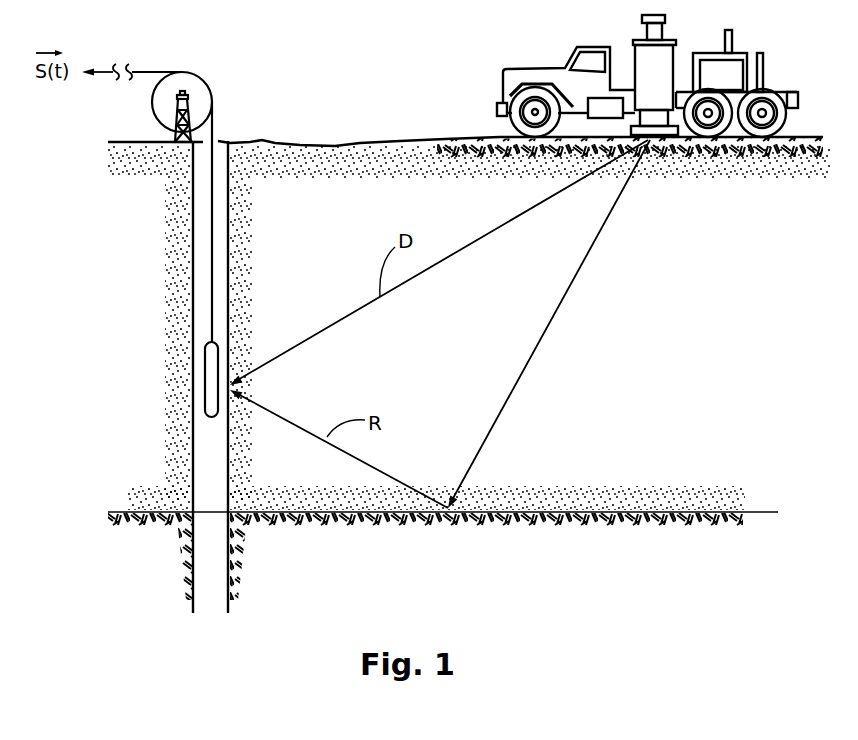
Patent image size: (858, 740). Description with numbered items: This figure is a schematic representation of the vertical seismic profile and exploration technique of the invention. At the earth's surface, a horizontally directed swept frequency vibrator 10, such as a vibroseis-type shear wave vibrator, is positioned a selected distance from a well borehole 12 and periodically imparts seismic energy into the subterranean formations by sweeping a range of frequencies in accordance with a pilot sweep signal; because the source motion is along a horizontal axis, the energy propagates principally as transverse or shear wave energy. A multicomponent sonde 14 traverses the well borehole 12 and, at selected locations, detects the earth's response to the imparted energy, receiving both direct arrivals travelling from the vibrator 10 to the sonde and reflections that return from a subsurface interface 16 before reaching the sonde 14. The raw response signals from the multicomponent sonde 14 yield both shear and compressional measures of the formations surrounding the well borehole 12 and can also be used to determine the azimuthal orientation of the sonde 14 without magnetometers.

The horizontally directed swept frequency vibrator 10 is at (689, 29).
The well borehole 12 is at (201, 214).
The multicomponent sonde 14 is at (209, 378).
The subsurface reflector interface 16 is at (762, 512).